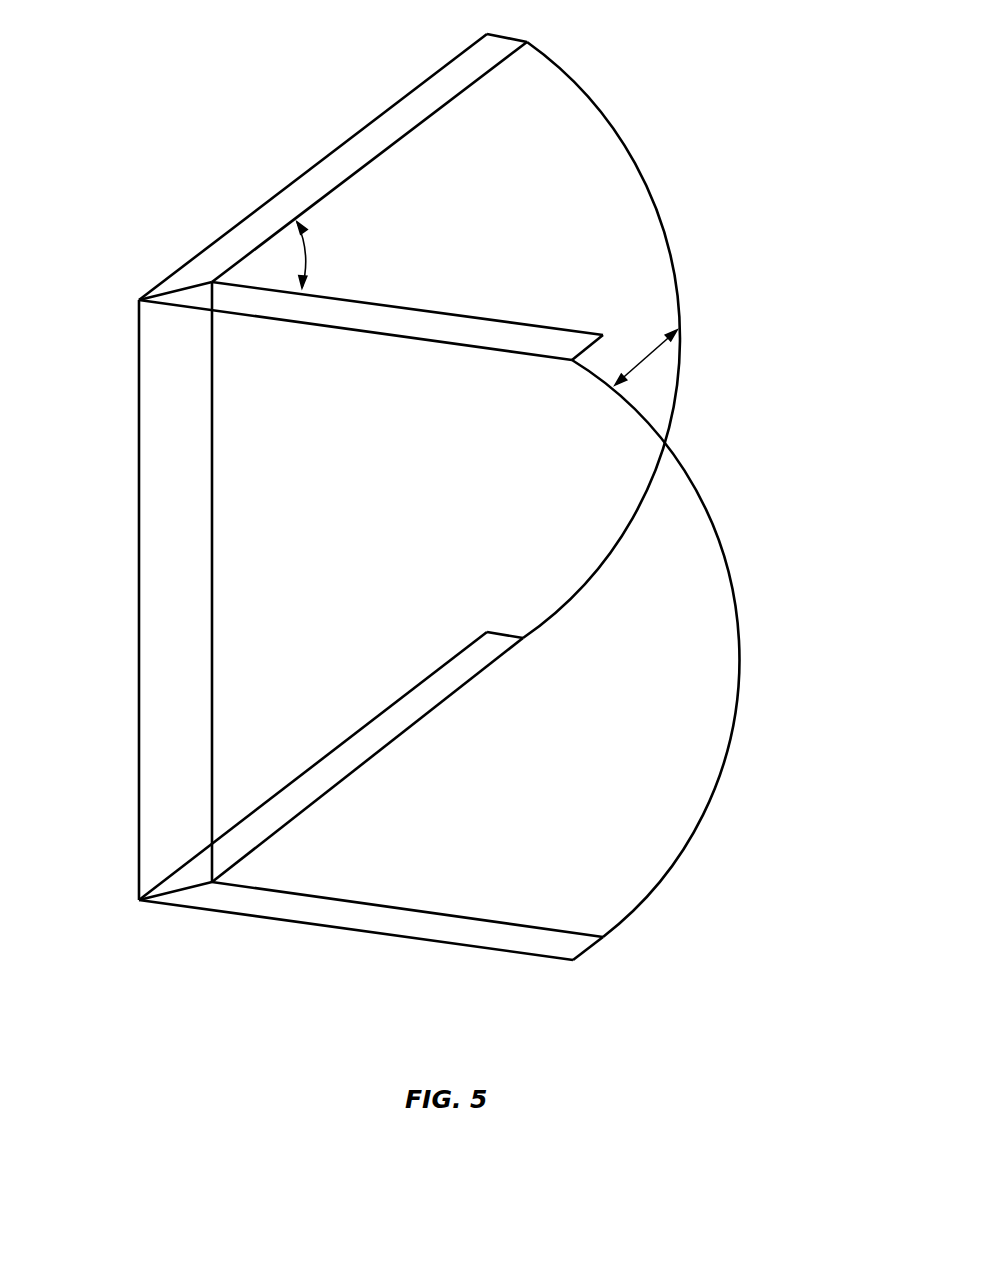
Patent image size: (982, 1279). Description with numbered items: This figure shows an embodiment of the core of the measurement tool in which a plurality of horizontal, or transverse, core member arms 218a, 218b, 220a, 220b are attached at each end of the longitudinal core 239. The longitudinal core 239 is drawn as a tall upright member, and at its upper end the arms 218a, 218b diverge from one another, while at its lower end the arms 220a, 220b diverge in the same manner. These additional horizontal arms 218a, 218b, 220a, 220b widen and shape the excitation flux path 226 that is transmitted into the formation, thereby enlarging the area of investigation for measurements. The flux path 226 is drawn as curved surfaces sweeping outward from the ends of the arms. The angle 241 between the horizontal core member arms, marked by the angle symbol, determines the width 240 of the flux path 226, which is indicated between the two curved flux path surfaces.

The horizontal core member arm 218a is at (323, 157).
The horizontal core member arm 218b is at (395, 338).
The horizontal core member arm 220a is at (412, 688).
The horizontal core member arm 220b is at (403, 940).
The flux path 226 is at (665, 242).
The longitudinal core 239 is at (158, 430).
The width of the flux path 240 is at (647, 358).
The wedge angle phi 241 is at (353, 250).